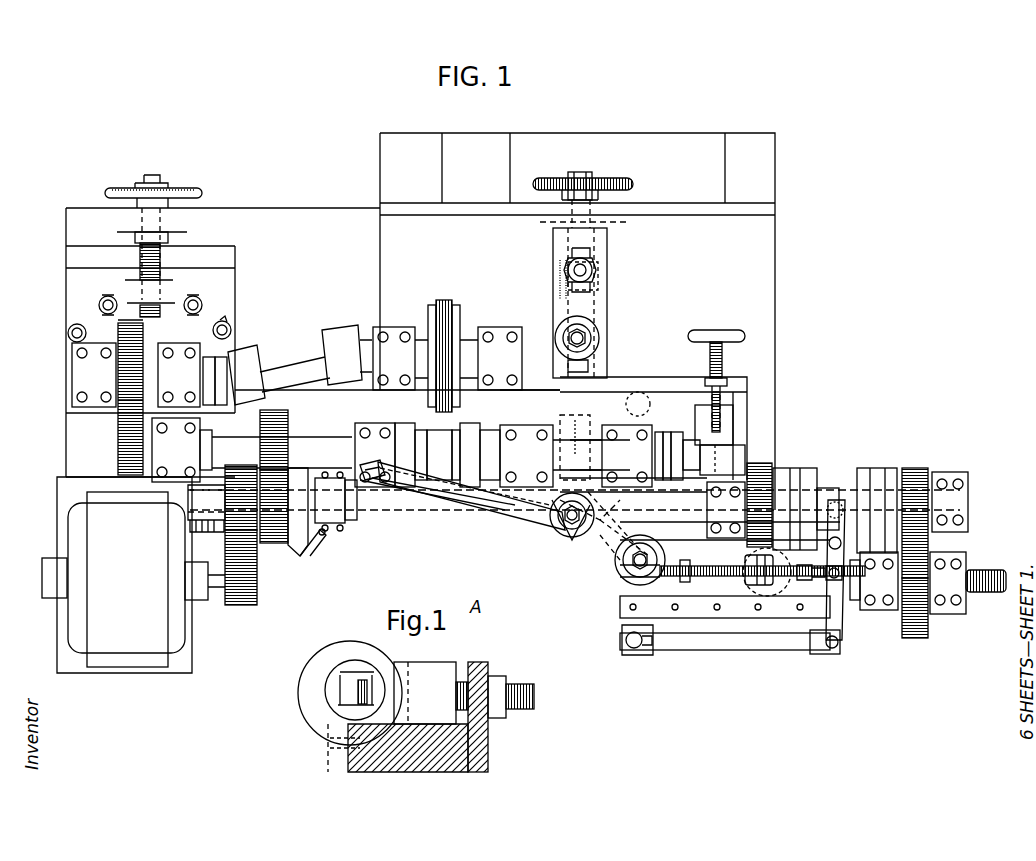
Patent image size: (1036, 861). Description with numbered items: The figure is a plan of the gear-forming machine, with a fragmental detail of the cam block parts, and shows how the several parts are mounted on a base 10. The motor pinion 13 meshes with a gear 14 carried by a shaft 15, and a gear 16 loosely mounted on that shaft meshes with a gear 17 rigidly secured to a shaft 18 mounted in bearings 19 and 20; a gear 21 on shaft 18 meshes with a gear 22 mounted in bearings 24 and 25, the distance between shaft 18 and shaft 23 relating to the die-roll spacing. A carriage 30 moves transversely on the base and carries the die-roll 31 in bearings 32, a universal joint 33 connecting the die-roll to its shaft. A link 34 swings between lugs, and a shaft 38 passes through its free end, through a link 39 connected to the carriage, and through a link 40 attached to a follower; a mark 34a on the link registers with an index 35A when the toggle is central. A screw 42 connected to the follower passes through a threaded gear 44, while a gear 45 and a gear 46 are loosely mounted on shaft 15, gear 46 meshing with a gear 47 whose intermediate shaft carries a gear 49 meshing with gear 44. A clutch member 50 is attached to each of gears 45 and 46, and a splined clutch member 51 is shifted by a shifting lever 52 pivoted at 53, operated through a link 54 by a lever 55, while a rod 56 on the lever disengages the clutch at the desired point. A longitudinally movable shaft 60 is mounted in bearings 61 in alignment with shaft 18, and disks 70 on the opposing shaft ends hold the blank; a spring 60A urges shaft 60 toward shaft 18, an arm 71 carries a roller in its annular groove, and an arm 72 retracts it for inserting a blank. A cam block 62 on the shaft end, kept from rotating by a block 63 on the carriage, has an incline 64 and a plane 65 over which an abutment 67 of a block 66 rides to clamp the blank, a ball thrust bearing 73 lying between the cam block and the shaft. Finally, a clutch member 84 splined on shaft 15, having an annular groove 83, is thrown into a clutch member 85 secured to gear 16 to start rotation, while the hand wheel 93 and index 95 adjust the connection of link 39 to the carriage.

In FIG. 1, the base 10 is at (297, 236).
In FIG. 1, the carriage 30 is at (380, 249).
In FIG. 1, the hand wheel 93 is at (612, 180).
In FIG. 1, the index 95 is at (563, 276).
In FIG. 1, the die-roll 31 is at (444, 305).
In FIG. 1, the bearings 32 is at (393, 340).
In FIG. 1, the universal joint 33 is at (296, 358).
In FIG. 1, the bearing 25 is at (94, 350).
In FIG. 1, the bearing 24 is at (180, 350).
In FIG. 1, the shaft 23 is at (212, 386).
In FIG. 1, the gear 22 is at (133, 400).
In FIG. 1, the gear 21 is at (125, 455).
In FIG. 1, the bearing 20 is at (183, 445).
In FIG. 1, the gear 17 is at (289, 418).
In FIG. 1, the shaft 18 is at (323, 445).
In FIG. 1, the bearing 19 is at (380, 432).
In FIG. 1, the arm 72 is at (375, 455).
In FIG. 1, the disks 70 is at (447, 444).
In FIG. 1, the longitudinally movable shaft 60 is at (496, 440).
In FIG. 1, the bearings 61 is at (530, 440).
In FIG. 1, the arm 71 is at (567, 448).
In FIG. 1, the spring 60A is at (634, 455).
In FIG. 1, the link 39 is at (638, 404).
In FIG. 1, the abutment 67 is at (697, 440).
In FIG. 1, the cam block 62 is at (680, 440).
In FIG. 1A, the cam block 62 is at (318, 708).
In FIG. 1, the block 63 is at (698, 392).
In FIG. 1A, the block 63 is at (330, 740).
In FIG. 1, the block 66 is at (722, 420).
In FIG. 1A, the block 66 is at (432, 686).
In FIG. 1, the incline 64 is at (722, 458).
In FIG. 1A, the incline 64 is at (372, 690).
In FIG. 1, the plane 65 is at (716, 461).
In FIG. 1A, the plane 65 is at (348, 685).
In FIG. 1, the ball thrust bearing 73 is at (670, 490).
In FIG. 1, the shaft 15 is at (470, 514).
In FIG. 1, the index 35A is at (570, 536).
In FIG. 1, the link 34 is at (596, 542).
In FIG. 1, the shaft 38 is at (626, 572).
In FIG. 1, the mark 34a is at (610, 560).
In FIG. 1, the link 40 is at (715, 587).
In FIG. 1, the rod 56 is at (748, 558).
In FIG. 1, the link 54 is at (756, 645).
In FIG. 1, the lever 55 is at (622, 641).
In FIG. 1, the shifting lever 52 is at (838, 618).
In FIG. 1, the pivot 53 is at (843, 541).
In FIG. 1, the clutch member 51 is at (830, 490).
In FIG. 1, the gear 46 is at (795, 509).
In FIG. 1, the gear 47 is at (760, 470).
In FIG. 1, the clutch member 50 is at (796, 480).
In FIG. 1, the gear 49 is at (918, 470).
In FIG. 1, the gear 44 is at (915, 640).
In FIG. 1, the gear 45 is at (940, 512).
In FIG. 1, the screw 42 is at (985, 594).
In FIG. 1, the motor pinion 13 is at (253, 592).
In FIG. 1, the gear 14 is at (243, 520).
In FIG. 1, the gear 16 is at (273, 546).
In FIG. 1, the annular groove 83 is at (363, 510).
In FIG. 1, the clutch member 84 is at (328, 520).
In FIG. 1, the clutch member 85 is at (296, 548).